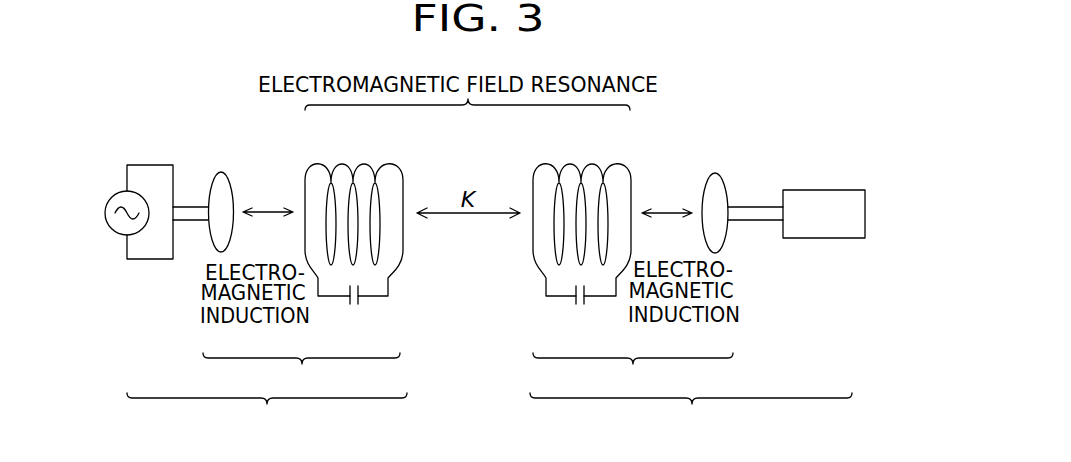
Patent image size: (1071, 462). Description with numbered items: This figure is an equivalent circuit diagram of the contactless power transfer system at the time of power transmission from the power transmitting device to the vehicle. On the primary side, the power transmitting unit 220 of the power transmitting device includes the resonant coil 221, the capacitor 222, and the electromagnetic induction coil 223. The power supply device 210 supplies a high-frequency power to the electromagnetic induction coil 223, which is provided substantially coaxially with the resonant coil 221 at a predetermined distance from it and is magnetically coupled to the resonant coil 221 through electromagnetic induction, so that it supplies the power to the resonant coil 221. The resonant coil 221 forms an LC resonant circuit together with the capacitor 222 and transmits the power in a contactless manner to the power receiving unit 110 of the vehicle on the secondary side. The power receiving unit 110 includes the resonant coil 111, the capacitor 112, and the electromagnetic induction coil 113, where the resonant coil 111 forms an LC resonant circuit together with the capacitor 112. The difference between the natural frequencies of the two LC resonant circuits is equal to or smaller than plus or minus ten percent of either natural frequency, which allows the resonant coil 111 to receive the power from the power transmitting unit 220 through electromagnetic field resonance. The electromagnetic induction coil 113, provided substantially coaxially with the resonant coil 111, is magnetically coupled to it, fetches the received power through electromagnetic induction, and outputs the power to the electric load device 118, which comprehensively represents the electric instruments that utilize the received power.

The power supply device 210 is at (120, 191).
The electromagnetic induction coil 223 is at (222, 172).
The resonant coil 221 is at (345, 163).
The capacitor 222 is at (360, 301).
The power transmitting unit 220 is at (242, 288).
The resonant coil 111 is at (594, 163).
The capacitor 112 is at (574, 304).
The electromagnetic induction coil 113 is at (715, 173).
The electric load device 118 is at (820, 190).
The power receiving unit 110 is at (697, 279).